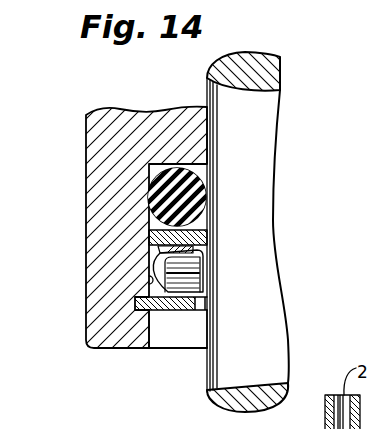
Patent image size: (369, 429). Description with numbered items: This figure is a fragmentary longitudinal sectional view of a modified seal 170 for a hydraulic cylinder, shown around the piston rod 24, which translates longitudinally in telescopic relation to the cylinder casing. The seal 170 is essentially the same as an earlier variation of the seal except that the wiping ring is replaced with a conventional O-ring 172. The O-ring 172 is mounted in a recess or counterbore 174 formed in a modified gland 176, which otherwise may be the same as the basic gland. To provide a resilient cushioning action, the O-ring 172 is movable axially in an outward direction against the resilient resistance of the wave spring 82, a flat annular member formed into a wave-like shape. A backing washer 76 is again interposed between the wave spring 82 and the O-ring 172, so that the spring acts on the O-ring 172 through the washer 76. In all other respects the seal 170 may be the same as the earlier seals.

The modified seal 170 is at (88, 353).
The modified gland 176 is at (93, 143).
The O-ring 172 is at (160, 202).
The backing washer 76 is at (205, 238).
The wave spring 82 is at (190, 272).
The recess or counterbore 174 is at (146, 283).
The piston rod 24 is at (222, 364).